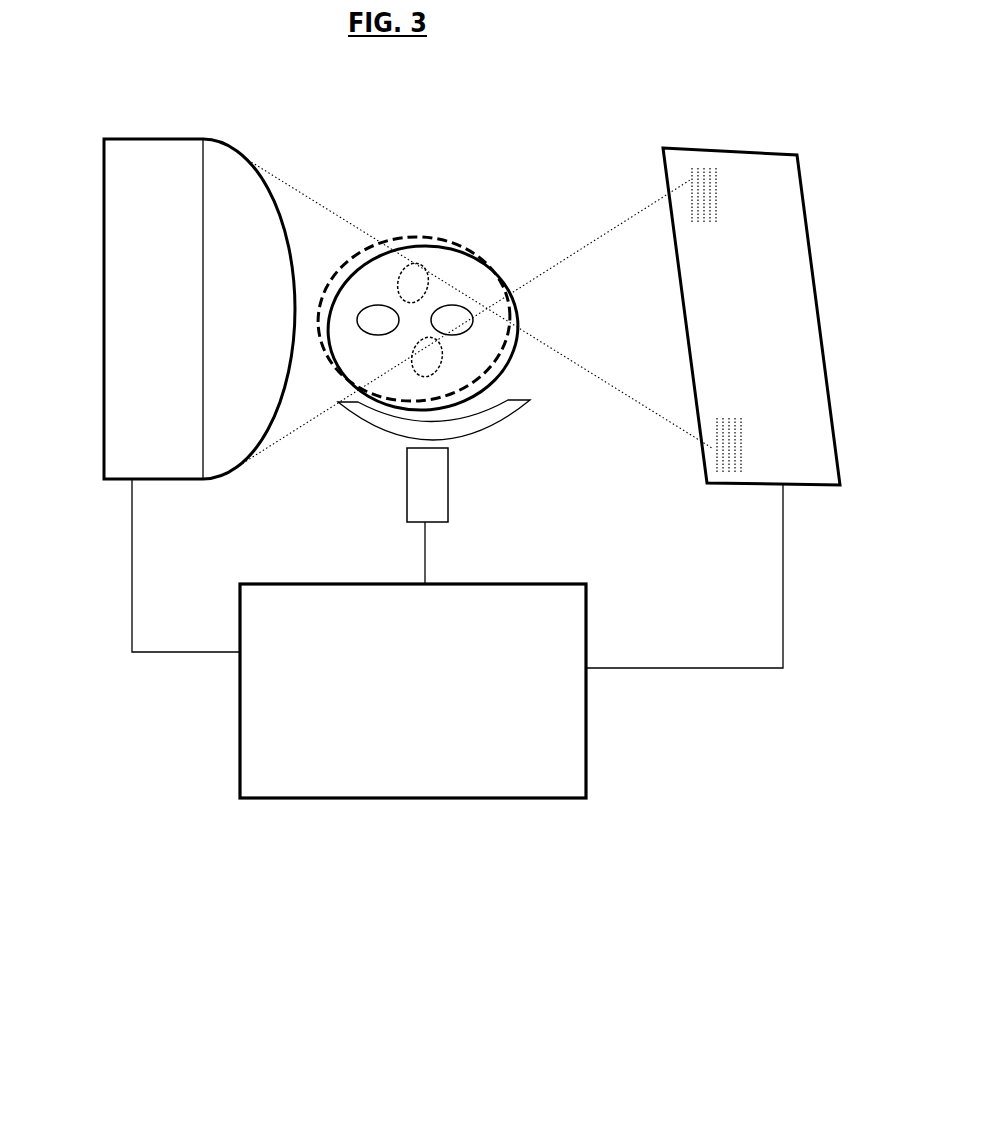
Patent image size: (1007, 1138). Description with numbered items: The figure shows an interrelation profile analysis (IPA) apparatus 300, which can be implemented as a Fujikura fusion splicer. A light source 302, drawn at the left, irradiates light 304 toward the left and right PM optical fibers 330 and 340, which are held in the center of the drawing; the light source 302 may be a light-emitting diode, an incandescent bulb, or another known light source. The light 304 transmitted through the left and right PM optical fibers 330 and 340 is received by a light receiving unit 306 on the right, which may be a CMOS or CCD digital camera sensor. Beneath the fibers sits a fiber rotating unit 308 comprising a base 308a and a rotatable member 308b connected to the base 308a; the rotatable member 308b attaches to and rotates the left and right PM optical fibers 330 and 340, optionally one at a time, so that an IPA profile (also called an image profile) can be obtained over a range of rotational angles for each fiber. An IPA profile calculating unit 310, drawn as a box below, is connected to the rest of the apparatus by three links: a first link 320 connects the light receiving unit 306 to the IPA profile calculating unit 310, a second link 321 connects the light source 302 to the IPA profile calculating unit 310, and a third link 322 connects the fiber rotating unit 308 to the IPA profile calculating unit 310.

The interrelation profile analysis (IPA) apparatus 300 is at (529, 917).
The light source 302 is at (131, 134).
The light 304 is at (272, 173).
The light receiving unit 306 is at (674, 148).
The fiber rotating unit 308 is at (469, 463).
The base 308a is at (448, 506).
The rotatable member 308b is at (502, 430).
The IPA profile calculating unit 310 is at (240, 732).
The first link 320 is at (692, 668).
The second link 321 is at (132, 607).
The third link 322 is at (425, 548).
The left PM optical fiber 330 is at (520, 325).
The right PM optical fiber 340 is at (438, 243).